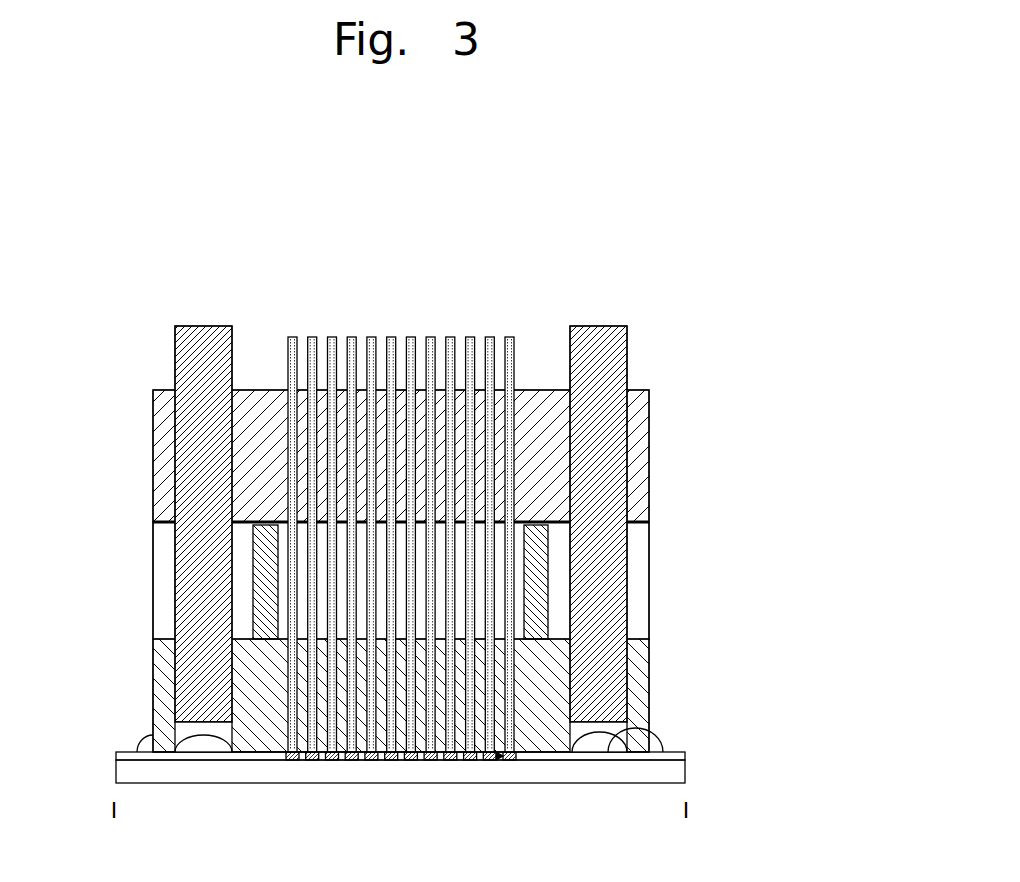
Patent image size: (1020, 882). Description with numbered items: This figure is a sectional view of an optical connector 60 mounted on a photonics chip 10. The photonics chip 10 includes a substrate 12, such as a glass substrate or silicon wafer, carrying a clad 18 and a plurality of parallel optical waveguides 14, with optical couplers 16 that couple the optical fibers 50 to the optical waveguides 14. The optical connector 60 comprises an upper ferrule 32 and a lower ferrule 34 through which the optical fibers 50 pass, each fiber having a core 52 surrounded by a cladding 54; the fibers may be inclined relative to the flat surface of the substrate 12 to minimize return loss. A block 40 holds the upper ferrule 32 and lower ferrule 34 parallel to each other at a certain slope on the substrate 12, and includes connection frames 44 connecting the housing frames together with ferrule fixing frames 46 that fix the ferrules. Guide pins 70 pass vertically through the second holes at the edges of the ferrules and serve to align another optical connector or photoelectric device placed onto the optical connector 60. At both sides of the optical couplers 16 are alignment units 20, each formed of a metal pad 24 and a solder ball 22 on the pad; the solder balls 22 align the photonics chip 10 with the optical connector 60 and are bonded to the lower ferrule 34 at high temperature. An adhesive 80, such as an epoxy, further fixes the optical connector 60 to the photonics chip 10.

The photonics chip 10 is at (439, 802).
The substrate 12 is at (592, 784).
The optical waveguides 14 is at (496, 761).
The optical couplers 16 is at (508, 761).
The clad 18 is at (261, 761).
The alignment units 20 is at (666, 721).
The solder ball 22 is at (598, 742).
The pad 24 is at (662, 739).
The upper ferrule 32 is at (160, 451).
The lower ferrule 34 is at (158, 683).
The block 40 is at (346, 580).
The connection frames 44 is at (263, 565).
The ferrule fixing frames 46 is at (160, 598).
The optical fibers 50 is at (414, 493).
The core 52 is at (401, 509).
The cladding 54 is at (491, 337).
The optical connector 60 is at (672, 299).
The guide pins 70 is at (607, 330).
The adhesive 80 is at (143, 740).